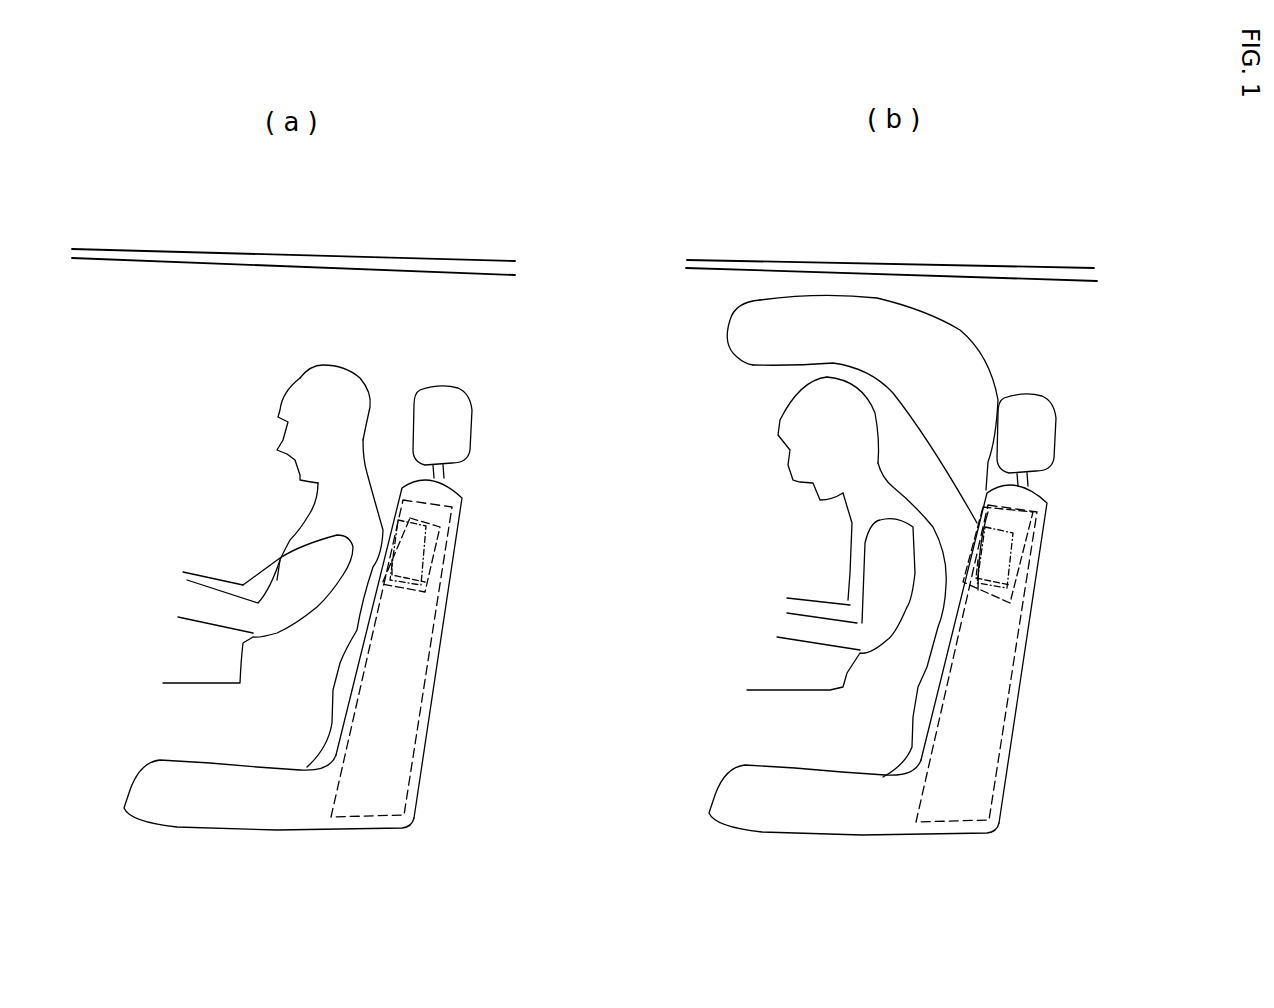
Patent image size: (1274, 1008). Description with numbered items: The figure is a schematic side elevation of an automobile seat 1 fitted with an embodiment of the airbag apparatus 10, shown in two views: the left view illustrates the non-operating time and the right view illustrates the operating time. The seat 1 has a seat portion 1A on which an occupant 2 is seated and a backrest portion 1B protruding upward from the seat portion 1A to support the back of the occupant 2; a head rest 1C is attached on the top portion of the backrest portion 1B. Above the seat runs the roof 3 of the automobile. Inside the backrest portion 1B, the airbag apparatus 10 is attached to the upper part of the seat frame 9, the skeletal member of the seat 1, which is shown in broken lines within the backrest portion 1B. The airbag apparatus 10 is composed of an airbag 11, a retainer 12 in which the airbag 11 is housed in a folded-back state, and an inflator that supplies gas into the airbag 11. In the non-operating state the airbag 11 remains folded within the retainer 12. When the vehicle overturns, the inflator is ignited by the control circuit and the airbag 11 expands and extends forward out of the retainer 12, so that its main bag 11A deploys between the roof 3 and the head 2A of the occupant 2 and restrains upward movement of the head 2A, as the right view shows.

The seat 1 is at (619, 642).
The seat portion 1A is at (237, 815).
The backrest portion 1B is at (455, 493).
The head rest 1C is at (470, 428).
The occupant 2 is at (554, 541).
The head 2A is at (326, 378).
The roof 3 is at (310, 254).
The seat frame 9 is at (360, 820).
The airbag apparatus 10 is at (472, 547).
The airbag 11 is at (716, 440).
The main bag 11A is at (747, 330).
The retainer 12 is at (435, 578).